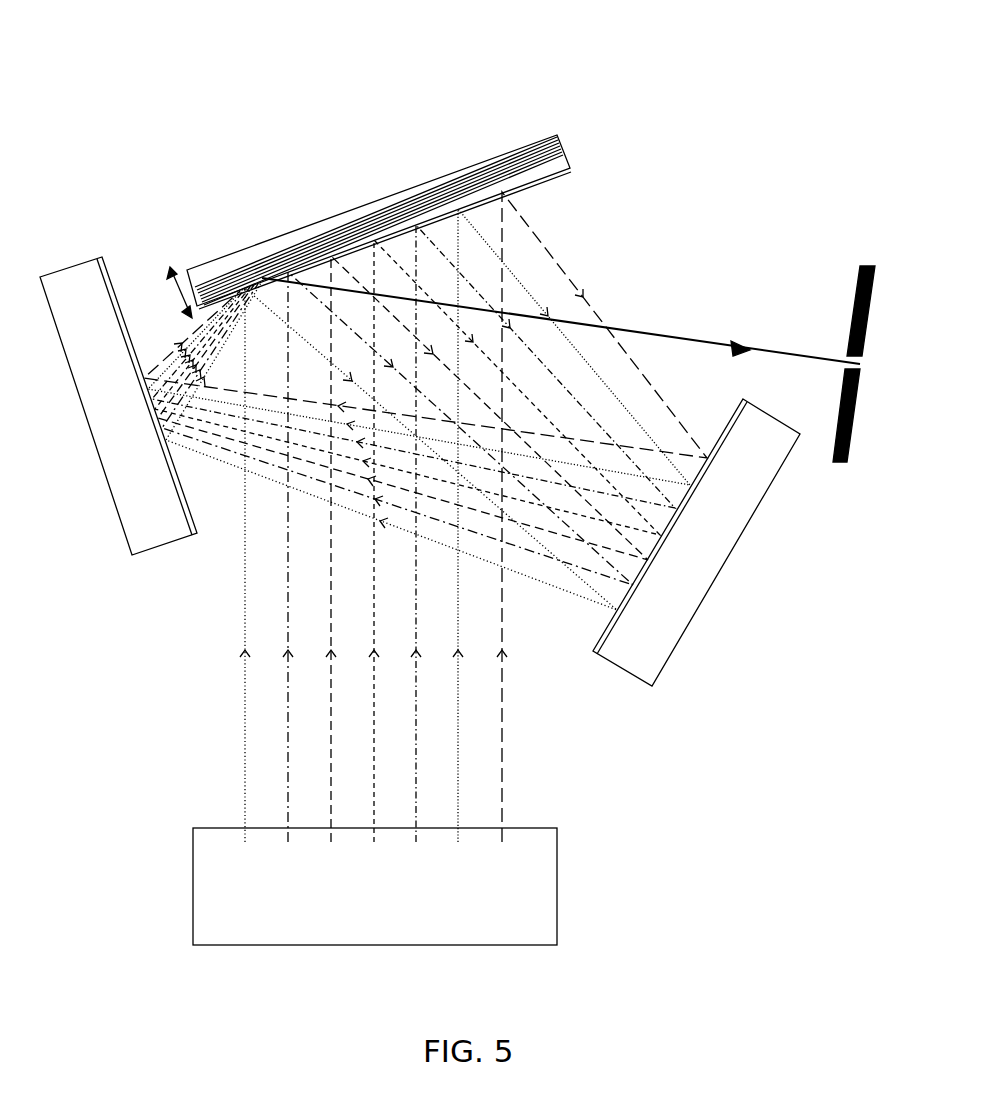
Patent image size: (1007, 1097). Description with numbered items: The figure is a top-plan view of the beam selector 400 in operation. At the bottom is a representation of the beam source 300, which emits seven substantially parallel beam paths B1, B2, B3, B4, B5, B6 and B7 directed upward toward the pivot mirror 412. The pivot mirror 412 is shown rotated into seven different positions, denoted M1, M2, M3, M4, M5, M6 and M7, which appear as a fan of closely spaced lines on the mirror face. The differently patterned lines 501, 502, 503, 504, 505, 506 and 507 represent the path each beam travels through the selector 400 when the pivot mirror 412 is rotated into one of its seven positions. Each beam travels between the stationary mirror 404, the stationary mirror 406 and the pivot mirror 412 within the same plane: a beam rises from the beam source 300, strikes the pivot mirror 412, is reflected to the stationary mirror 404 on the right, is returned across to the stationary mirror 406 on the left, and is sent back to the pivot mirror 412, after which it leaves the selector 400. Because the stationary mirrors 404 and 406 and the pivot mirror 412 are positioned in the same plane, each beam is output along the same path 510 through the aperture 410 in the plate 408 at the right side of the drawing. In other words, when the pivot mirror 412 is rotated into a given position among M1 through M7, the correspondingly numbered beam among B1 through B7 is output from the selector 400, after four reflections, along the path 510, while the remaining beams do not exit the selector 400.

The beam selector 400 is at (199, 116).
The pivot mirror 412 is at (267, 226).
The stationary mirror 406 is at (180, 537).
The stationary mirror 404 is at (728, 547).
The plate 408 is at (836, 455).
The aperture 410 is at (848, 362).
The output path 510 is at (660, 332).
The beam source 300 is at (557, 927).
The beam path line 501 is at (245, 798).
The beam path line 502 is at (288, 775).
The beam path line 503 is at (331, 740).
The beam path line 504 is at (374, 708).
The beam path line 505 is at (418, 687).
The beam path line 506 is at (458, 743).
The beam path line 507 is at (502, 800).
The beam path B1 is at (246, 859).
The beam path B2 is at (288, 859).
The beam path B3 is at (331, 859).
The beam path B4 is at (374, 859).
The beam path B5 is at (416, 859).
The beam path B6 is at (458, 859).
The beam path B7 is at (502, 859).
The mirror position M1 is at (552, 130).
The mirror position M2 is at (557, 130).
The mirror position M3 is at (558, 133).
The mirror position M4 is at (560, 138).
The mirror position M5 is at (562, 142).
The mirror position M6 is at (563, 147).
The mirror position M7 is at (567, 167).